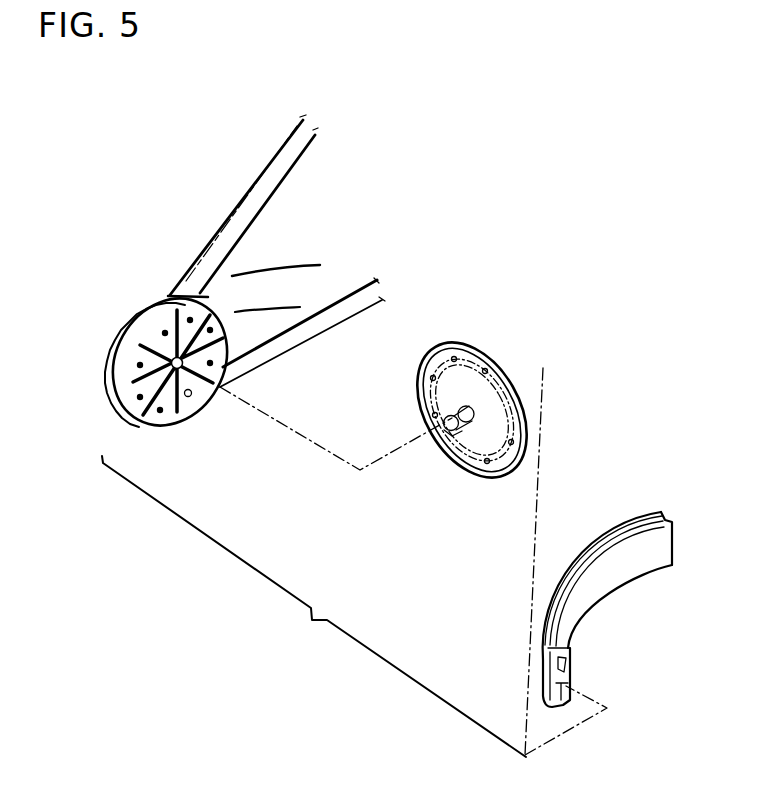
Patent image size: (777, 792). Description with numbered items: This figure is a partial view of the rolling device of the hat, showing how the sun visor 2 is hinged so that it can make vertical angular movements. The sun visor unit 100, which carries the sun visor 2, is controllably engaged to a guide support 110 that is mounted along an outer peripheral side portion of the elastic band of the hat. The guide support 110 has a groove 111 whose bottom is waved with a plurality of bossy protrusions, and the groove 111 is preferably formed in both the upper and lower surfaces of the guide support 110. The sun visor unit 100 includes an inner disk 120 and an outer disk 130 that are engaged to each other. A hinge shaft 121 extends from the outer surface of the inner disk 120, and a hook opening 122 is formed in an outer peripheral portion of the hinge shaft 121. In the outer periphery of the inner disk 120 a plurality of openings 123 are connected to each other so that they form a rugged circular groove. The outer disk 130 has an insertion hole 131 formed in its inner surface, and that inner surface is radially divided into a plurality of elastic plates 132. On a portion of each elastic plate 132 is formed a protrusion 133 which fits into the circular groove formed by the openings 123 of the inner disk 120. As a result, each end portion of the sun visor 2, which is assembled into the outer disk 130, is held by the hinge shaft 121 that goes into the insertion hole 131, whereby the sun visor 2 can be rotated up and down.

The sun visor 2 is at (267, 226).
The sun visor unit 100 is at (354, 562).
The guide support 110 is at (606, 591).
The groove 111 is at (607, 537).
The inner disk 120 is at (468, 347).
The hinge shaft 121 is at (440, 434).
The hook opening 122 is at (470, 430).
The openings 123 is at (486, 393).
The outer disk 130 is at (123, 333).
The insertion hole 131 is at (181, 376).
The elastic plates 132 is at (188, 397).
The protrusion 133 is at (160, 414).